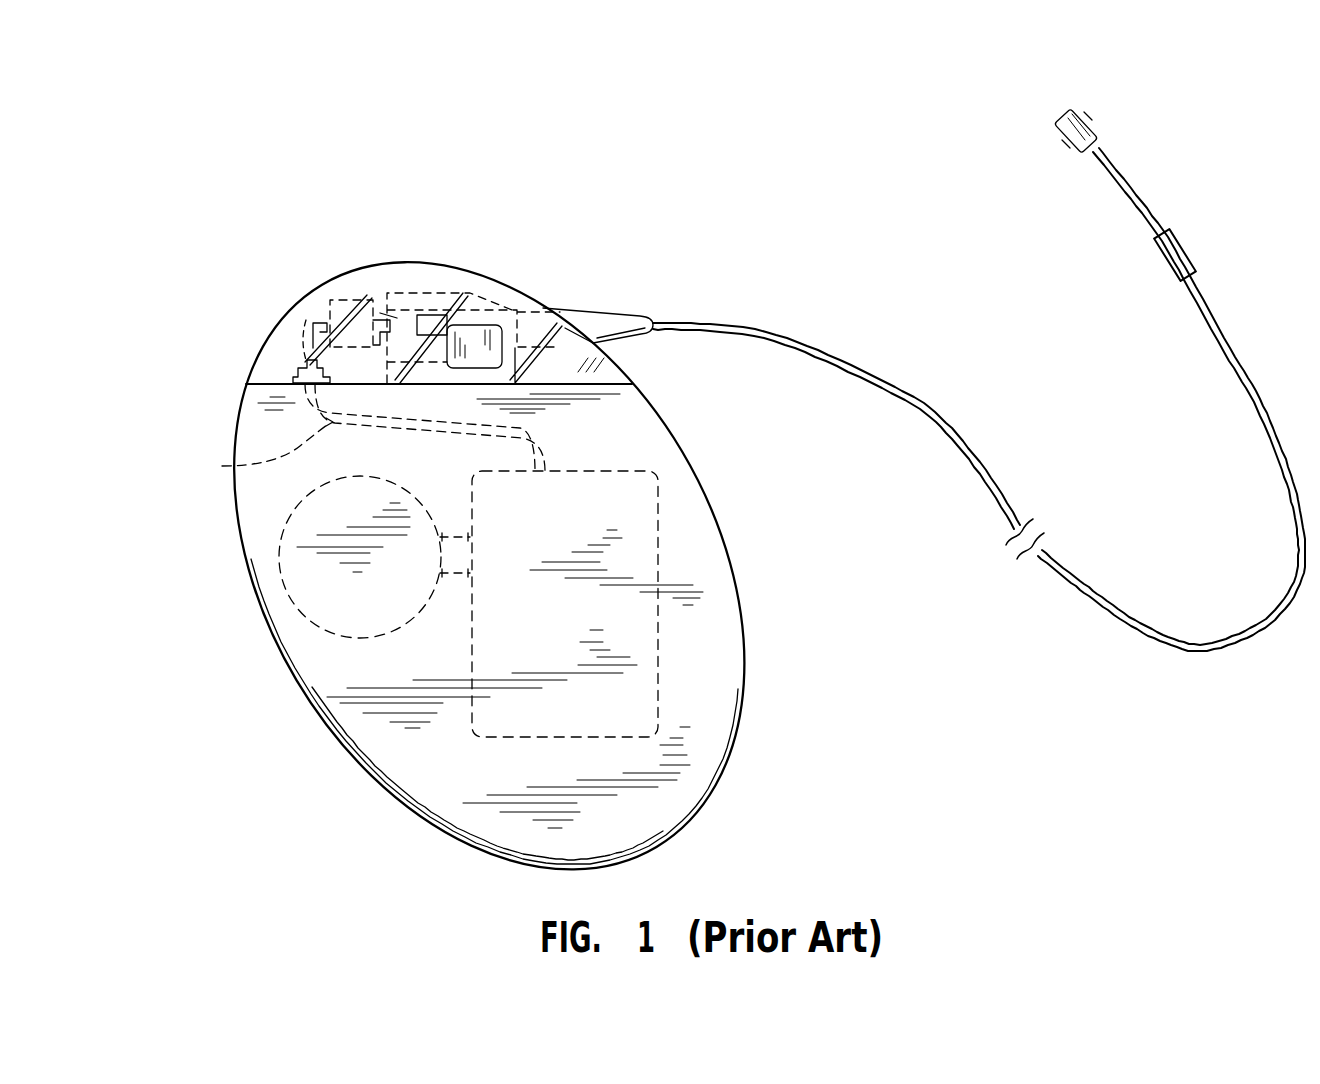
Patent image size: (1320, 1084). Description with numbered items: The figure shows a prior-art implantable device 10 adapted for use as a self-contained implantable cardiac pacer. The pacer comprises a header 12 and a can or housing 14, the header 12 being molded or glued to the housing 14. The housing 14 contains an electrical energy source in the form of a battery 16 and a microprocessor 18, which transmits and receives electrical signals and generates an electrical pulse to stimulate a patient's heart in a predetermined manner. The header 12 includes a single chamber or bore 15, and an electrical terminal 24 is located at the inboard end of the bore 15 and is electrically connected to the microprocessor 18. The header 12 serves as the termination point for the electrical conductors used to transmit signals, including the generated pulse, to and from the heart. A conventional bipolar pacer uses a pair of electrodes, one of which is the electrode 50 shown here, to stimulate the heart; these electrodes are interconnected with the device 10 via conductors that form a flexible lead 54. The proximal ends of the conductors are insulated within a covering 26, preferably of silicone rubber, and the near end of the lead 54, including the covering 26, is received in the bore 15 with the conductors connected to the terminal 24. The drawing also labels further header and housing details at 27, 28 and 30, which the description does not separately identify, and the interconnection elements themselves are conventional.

The implantable device 10 is at (489, 556).
The header 12 is at (408, 275).
The housing 14 is at (720, 707).
The bore 15 is at (565, 330).
The battery 16 is at (285, 525).
The microprocessor 18 is at (658, 540).
The electrical terminal 24 is at (327, 288).
The covering 26 is at (600, 312).
The header connector assembly 27 is at (475, 280).
The conductors 28 is at (223, 466).
The feedthrough 30 is at (292, 374).
The electrode 50 is at (1082, 114).
The lead 54 is at (930, 410).